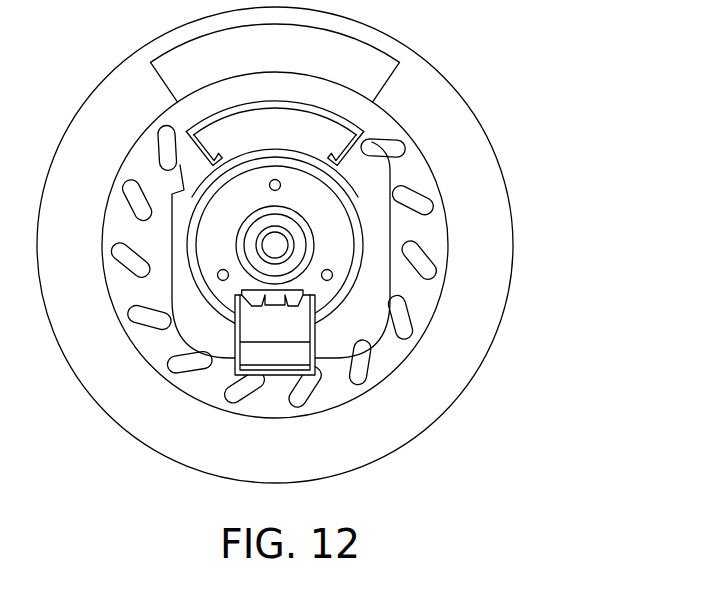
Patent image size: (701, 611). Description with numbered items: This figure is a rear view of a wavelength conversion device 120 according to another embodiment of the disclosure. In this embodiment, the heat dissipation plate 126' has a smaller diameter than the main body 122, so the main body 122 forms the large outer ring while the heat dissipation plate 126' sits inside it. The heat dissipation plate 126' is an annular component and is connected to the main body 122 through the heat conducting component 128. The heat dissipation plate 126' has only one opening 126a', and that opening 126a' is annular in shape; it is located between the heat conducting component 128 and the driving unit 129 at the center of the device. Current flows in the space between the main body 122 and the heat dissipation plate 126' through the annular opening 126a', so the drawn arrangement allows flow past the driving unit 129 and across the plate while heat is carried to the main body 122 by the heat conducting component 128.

The wavelength conversion device 120 is at (336, 245).
The main body 122 is at (470, 145).
The heat dissipation plate 126' is at (362, 302).
The opening 126a' is at (387, 250).
The heat conducting component 128 is at (358, 372).
The driving unit 129 is at (320, 231).